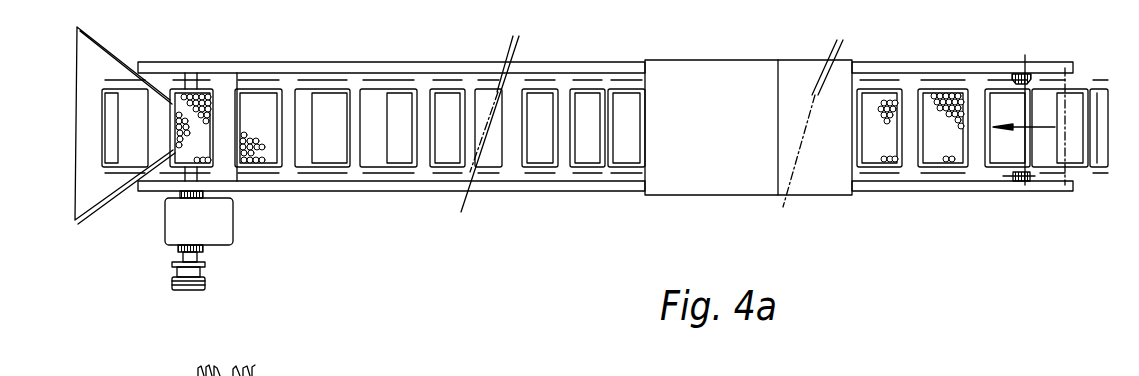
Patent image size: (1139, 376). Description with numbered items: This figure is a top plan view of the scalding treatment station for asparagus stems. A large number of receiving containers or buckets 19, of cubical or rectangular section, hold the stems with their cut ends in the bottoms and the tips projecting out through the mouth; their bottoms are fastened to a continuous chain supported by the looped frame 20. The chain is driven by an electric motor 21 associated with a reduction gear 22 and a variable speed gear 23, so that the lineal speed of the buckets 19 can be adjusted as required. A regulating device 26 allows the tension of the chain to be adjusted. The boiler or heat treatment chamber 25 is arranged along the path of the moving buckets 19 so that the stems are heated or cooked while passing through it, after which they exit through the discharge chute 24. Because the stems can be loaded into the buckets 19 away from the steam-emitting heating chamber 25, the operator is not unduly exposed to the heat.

The receiving containers or buckets 19 is at (532, 168).
The looped frame 20 is at (866, 72).
The electric motor 21 is at (203, 250).
The reduction gear 22 is at (222, 213).
The variable speed gear 23 is at (198, 273).
The discharge chute 24 is at (86, 197).
The boiler or heat treatment chamber 25 is at (807, 187).
The regulating device 26 is at (1013, 181).